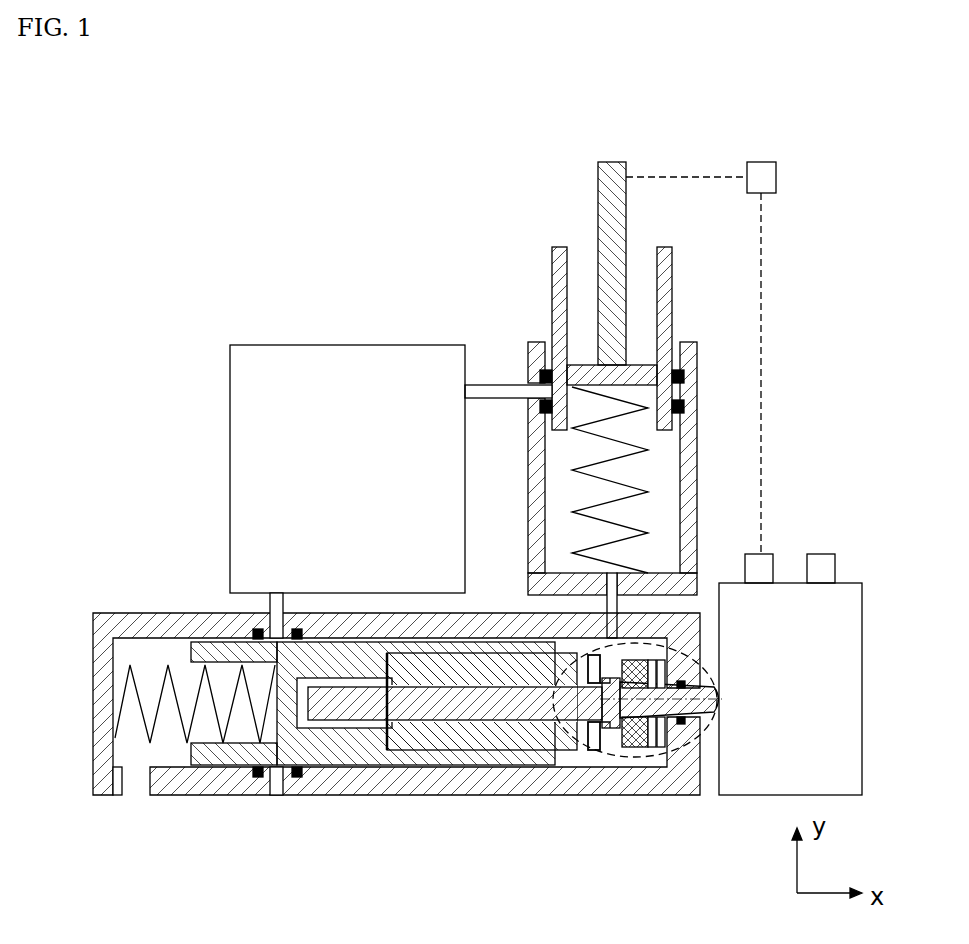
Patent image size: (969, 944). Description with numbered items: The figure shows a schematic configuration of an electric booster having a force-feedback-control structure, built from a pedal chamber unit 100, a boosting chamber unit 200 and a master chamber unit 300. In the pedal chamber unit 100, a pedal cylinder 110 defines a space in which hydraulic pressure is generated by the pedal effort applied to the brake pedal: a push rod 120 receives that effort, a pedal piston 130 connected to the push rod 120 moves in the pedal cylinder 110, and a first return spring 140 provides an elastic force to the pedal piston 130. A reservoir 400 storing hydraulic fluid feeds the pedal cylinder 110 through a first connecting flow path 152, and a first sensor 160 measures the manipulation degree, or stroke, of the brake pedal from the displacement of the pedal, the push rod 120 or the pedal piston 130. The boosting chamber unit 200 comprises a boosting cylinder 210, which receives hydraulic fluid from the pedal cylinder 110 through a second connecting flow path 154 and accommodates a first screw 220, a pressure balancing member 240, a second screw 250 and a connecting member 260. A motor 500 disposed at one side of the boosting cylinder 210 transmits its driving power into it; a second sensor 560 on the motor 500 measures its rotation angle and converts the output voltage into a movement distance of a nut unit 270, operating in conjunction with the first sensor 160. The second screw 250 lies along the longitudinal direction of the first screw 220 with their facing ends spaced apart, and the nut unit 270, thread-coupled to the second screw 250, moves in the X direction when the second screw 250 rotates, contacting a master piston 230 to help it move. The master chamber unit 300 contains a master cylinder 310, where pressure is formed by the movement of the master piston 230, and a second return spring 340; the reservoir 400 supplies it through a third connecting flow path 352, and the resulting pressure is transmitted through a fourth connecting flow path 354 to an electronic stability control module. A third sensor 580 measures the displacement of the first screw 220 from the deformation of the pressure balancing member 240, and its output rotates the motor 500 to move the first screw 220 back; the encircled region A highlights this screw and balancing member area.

The pedal chamber unit 100 is at (635, 369).
The pedal cylinder 110 is at (539, 344).
The push rod 120 is at (612, 167).
The pedal piston 130 is at (561, 250).
The first return spring 140 is at (647, 450).
The first connecting flow path 152 is at (540, 397).
The second connecting flow path 154 is at (613, 577).
The first sensor 160 is at (767, 163).
The boosting chamber unit 200 is at (456, 775).
The boosting cylinder 210 is at (376, 783).
The first screw 220 is at (623, 707).
The master piston 230 is at (332, 748).
The pressure balancing member 240 is at (640, 737).
The second screw 250 is at (402, 700).
The connecting member 260 is at (600, 740).
The nut unit 270 is at (472, 737).
The master chamber unit 300 is at (359, 706).
The master cylinder 310 is at (148, 623).
The second return spring 340 is at (115, 702).
The third connecting flow path 352 is at (280, 603).
The fourth connecting flow path 354 is at (137, 782).
The reservoir 400 is at (301, 357).
The motor 500 is at (822, 647).
The second sensor 560 is at (768, 555).
The third sensor 580 is at (825, 555).
The detail region A is at (688, 757).